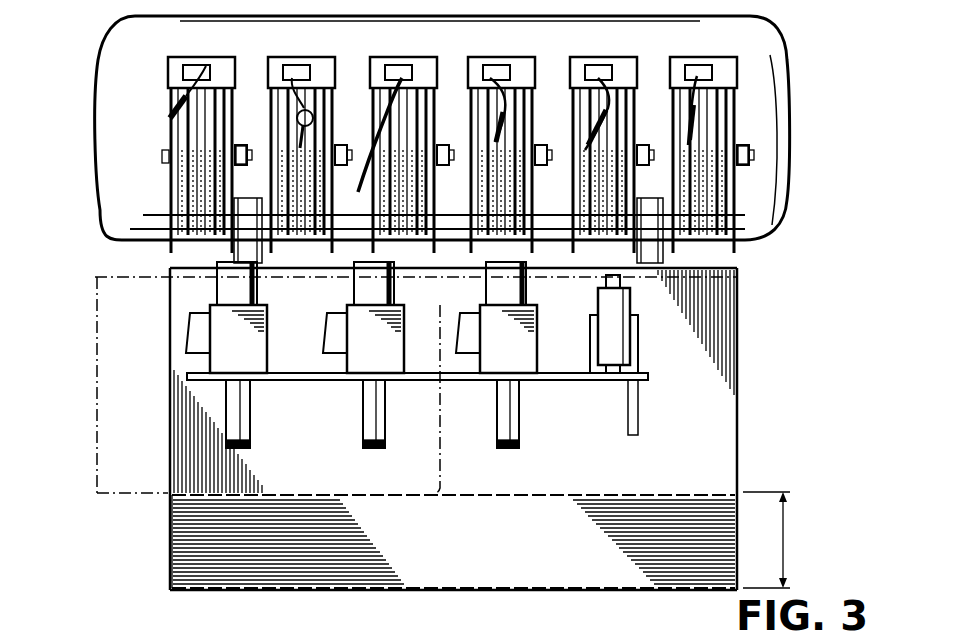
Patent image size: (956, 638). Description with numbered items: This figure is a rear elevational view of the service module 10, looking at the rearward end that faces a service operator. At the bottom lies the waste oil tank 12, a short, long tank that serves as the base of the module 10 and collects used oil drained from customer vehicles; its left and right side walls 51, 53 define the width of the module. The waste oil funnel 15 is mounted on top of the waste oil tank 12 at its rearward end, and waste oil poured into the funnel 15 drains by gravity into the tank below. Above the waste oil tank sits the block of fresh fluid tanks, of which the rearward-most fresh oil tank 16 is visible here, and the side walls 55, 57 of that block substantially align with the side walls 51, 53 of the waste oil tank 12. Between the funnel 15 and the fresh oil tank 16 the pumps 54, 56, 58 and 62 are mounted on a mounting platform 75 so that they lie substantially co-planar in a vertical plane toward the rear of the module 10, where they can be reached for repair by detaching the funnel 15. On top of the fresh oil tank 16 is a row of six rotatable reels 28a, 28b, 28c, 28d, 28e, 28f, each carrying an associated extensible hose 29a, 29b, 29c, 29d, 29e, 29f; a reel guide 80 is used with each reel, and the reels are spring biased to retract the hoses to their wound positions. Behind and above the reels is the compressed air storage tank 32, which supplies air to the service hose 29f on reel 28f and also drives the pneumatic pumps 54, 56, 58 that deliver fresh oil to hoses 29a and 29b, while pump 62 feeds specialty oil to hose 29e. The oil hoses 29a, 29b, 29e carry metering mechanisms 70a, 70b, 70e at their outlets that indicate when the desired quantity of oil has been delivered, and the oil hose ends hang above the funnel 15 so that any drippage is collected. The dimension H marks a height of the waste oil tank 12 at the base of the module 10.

The service module 10 is at (843, 39).
The waste oil tank 12 is at (476, 574).
The waste oil funnel 15 is at (95, 430).
The fresh oil tank 16 is at (586, 459).
The rotatable reel 28a is at (215, 57).
The rotatable reel 28b is at (318, 57).
The rotatable reel 28c is at (417, 57).
The rotatable reel 28d is at (518, 57).
The rotatable reel 28e is at (620, 57).
The rotatable reel 28f is at (720, 57).
The extensible hose 29a is at (178, 187).
The extensible hose 29b is at (302, 250).
The extensible hose 29c is at (402, 243).
The extensible hose 29d is at (528, 285).
The extensible hose 29e is at (648, 270).
The service hose 29f is at (735, 250).
The compressed air storage tank 32 is at (106, 62).
The side wall of waste oil tank 51 is at (738, 512).
The side wall of waste oil tank 53 is at (141, 541).
The pneumatic pump 54 is at (246, 363).
The side wall of fresh fluid tank block 55 is at (738, 391).
The pneumatic pump 56 is at (376, 363).
The side wall of fresh fluid tank block 57 is at (170, 453).
The pneumatic pump 58 is at (513, 356).
The pneumatic pump 62 is at (616, 345).
The metering mechanism 70a is at (182, 76).
The metering mechanism 70b is at (285, 92).
The metering mechanism 70e is at (607, 90).
The mounting platform 75 is at (432, 380).
The reel guide 80 is at (251, 147).
The height dimension H is at (767, 540).